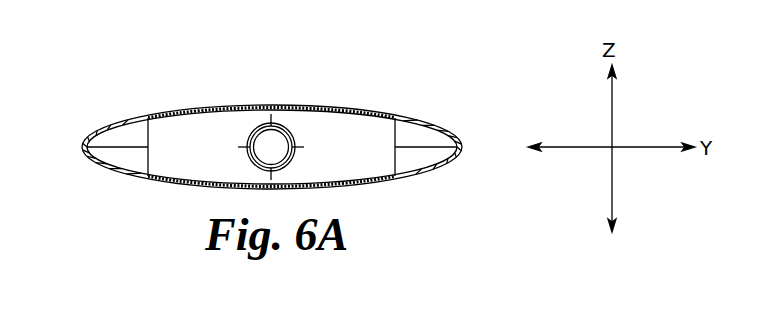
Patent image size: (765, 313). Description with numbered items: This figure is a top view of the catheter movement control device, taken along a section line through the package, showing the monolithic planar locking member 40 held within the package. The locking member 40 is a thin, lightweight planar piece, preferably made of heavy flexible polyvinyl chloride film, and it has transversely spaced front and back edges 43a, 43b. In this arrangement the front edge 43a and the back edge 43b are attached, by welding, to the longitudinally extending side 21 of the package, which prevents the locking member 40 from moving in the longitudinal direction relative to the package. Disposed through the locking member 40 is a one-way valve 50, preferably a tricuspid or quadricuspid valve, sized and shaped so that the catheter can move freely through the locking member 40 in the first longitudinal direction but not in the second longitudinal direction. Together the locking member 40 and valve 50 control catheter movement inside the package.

The longitudinally extending side 21 is at (433, 122).
The monolithic planar locking member 40 is at (202, 133).
The front edge 43a is at (177, 182).
The back edge 43b is at (362, 110).
The valve 50 is at (286, 128).